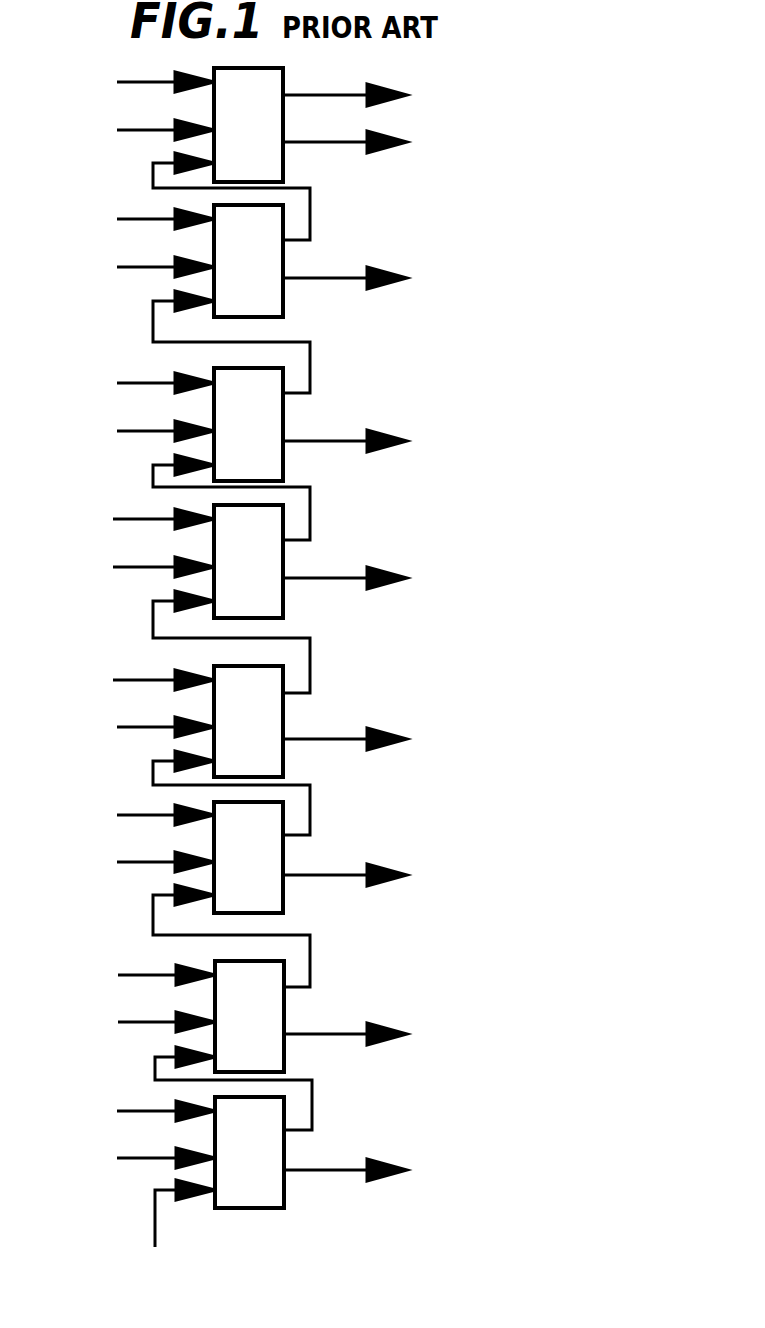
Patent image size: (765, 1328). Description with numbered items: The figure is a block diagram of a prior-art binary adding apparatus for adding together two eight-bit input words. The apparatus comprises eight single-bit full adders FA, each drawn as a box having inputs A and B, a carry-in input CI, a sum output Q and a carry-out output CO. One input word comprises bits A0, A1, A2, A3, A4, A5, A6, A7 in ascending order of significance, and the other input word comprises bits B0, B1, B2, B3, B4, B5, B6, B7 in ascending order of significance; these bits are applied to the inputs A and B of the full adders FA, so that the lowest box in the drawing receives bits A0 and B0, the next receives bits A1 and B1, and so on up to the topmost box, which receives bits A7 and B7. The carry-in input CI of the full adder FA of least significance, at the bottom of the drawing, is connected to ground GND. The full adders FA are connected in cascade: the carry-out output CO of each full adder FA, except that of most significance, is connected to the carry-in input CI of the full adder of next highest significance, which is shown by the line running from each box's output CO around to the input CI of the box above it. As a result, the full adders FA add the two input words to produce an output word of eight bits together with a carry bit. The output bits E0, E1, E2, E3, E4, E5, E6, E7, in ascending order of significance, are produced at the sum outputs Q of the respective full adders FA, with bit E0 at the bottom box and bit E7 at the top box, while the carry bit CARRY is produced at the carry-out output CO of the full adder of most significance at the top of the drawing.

The single-bit full adder FA is at (266, 166).
The bit A7 of first input word A7 is at (147, 82).
The bit B7 of second input word B7 is at (147, 130).
The bit A6 of first input word A6 is at (147, 219).
The bit B6 of second input word B6 is at (147, 267).
The bit A5 of first input word A5 is at (147, 383).
The bit B5 of second input word B5 is at (147, 431).
The bit A4 of first input word A4 is at (145, 519).
The bit B4 of second input word B4 is at (145, 567).
The bit A3 of first input word A3 is at (145, 680).
The bit B3 of second input word B3 is at (147, 728).
The bit A2 of first input word A2 is at (147, 815).
The bit B2 of second input word B2 is at (147, 862).
The bit A1 of first input word A1 is at (150, 975).
The bit B1 of second input word B1 is at (150, 1022).
The bit A0 of first input word A0 is at (147, 1111).
The bit B0 of second input word B0 is at (147, 1158).
The carry bit CARRY is at (389, 95).
The output bit E7 is at (364, 142).
The output bit E6 is at (364, 278).
The output bit E5 is at (364, 441).
The output bit E4 is at (364, 578).
The output bit E3 is at (364, 739).
The output bit E2 is at (364, 875).
The output bit E1 is at (363, 1034).
The output bit E0 is at (364, 1170).
The ground GND is at (156, 1240).